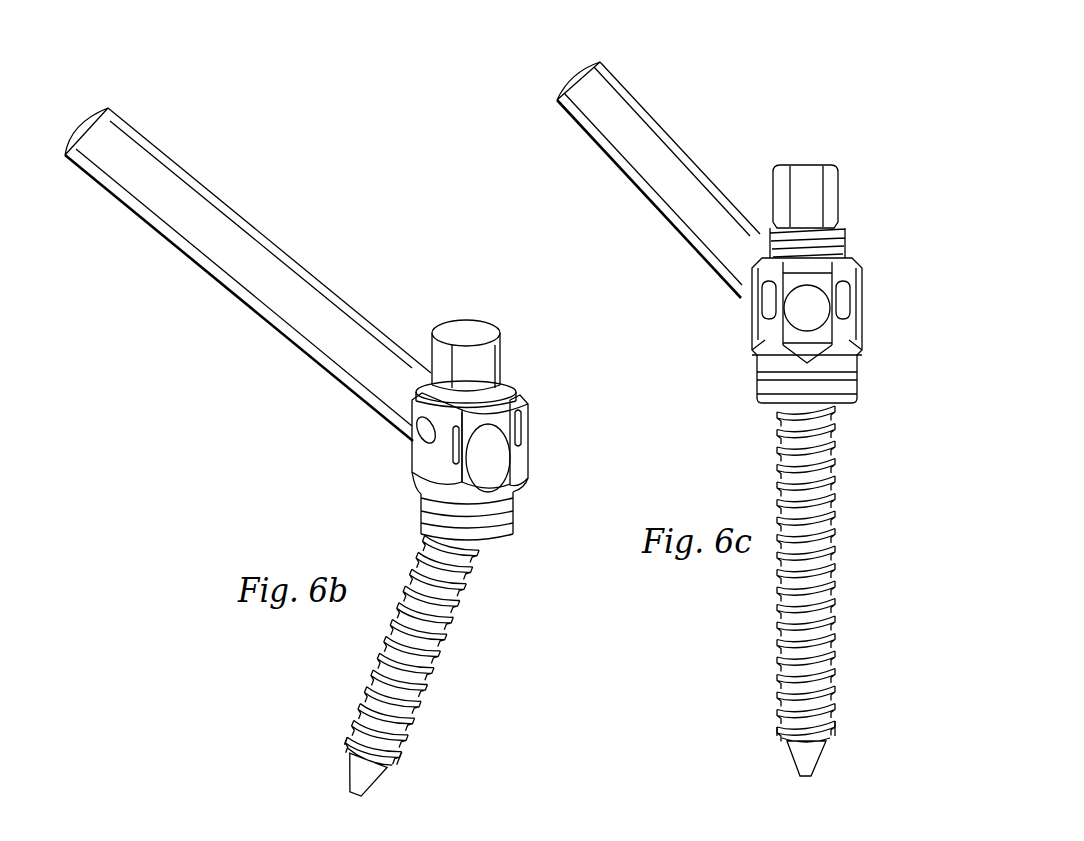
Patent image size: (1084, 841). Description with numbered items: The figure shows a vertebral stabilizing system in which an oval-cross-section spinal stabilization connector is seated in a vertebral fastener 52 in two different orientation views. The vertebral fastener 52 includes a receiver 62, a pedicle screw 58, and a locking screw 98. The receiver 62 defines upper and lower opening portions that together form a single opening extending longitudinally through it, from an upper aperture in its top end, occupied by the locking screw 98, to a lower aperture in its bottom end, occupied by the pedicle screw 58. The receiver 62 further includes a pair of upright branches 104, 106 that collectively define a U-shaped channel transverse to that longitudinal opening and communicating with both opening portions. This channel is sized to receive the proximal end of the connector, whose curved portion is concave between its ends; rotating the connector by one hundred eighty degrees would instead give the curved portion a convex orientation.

In FIG. 6B, the vertebral fastener 52 is at (546, 392).
In FIG. 6C, the vertebral fastener 52 is at (866, 246).
In FIG. 6B, the pedicle screw 58 is at (446, 653).
In FIG. 6C, the pedicle screw 58 is at (838, 655).
In FIG. 6B, the receiver 62 is at (412, 489).
In FIG. 6C, the receiver 62 is at (748, 349).
In FIG. 6B, the locking screw 98 is at (470, 328).
In FIG. 6C, the locking screw 98 is at (823, 162).
In FIG. 6B, the upright branch 104 is at (412, 473).
In FIG. 6C, the upright branch 104 is at (770, 322).
In FIG. 6B, the upright branch 106 is at (520, 462).
In FIG. 6C, the upright branch 106 is at (856, 275).